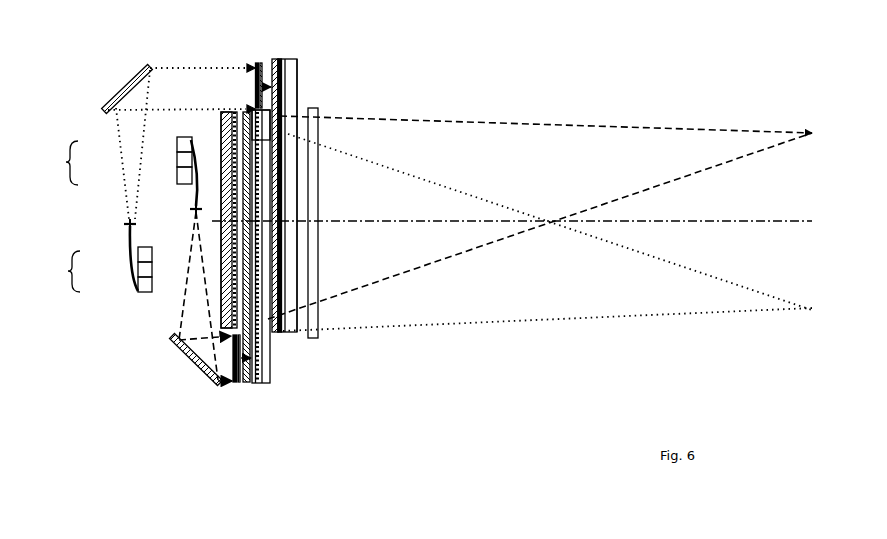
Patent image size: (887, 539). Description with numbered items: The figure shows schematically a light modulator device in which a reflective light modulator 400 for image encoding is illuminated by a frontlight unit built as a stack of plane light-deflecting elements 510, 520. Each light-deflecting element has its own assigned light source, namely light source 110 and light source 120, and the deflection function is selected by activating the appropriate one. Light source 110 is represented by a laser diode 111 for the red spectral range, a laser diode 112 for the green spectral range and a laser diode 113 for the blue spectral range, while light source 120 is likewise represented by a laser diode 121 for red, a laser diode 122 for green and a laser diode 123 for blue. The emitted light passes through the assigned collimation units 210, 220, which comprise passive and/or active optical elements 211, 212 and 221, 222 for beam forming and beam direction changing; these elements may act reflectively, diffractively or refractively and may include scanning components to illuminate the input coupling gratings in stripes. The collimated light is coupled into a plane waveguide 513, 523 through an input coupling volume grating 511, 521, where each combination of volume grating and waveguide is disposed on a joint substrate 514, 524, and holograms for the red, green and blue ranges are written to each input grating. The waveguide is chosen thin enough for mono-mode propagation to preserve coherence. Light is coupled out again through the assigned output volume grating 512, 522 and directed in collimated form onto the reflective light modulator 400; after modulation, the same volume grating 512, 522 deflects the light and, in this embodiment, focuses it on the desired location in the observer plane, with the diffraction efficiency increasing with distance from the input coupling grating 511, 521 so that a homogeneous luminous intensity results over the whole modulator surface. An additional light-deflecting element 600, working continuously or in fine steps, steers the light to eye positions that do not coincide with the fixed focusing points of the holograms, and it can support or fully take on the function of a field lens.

The light source 110 is at (120, 175).
The laser diode for the red spectral range 111 is at (177, 178).
The laser diode for the green spectral range 112 is at (177, 161).
The laser diode for the blue spectral range 113 is at (177, 144).
The light source 120 is at (95, 258).
The laser diode for the red spectral range 121 is at (138, 254).
The laser diode for the green spectral range 122 is at (138, 268).
The laser diode for the blue spectral range 123 is at (138, 288).
The collimation unit 210 is at (202, 381).
The optical element 211 is at (234, 383).
The optical element 212 is at (194, 359).
The collimation unit 220 is at (185, 64).
The optical element 221 is at (248, 75).
The optical element 222 is at (133, 83).
The reflective light modulator 400 is at (223, 110).
The light-deflecting element 510 is at (273, 252).
The volume grating 511 is at (247, 385).
The volume grating 512 is at (250, 111).
The plane waveguide 513 is at (258, 371).
The substrate 514 is at (265, 378).
The light-deflecting element 520 is at (309, 188).
The volume grating 521 is at (276, 60).
The volume grating 522 is at (282, 333).
The plane waveguide 523 is at (285, 88).
The substrate 524 is at (292, 78).
The light-deflecting element 600 is at (315, 128).